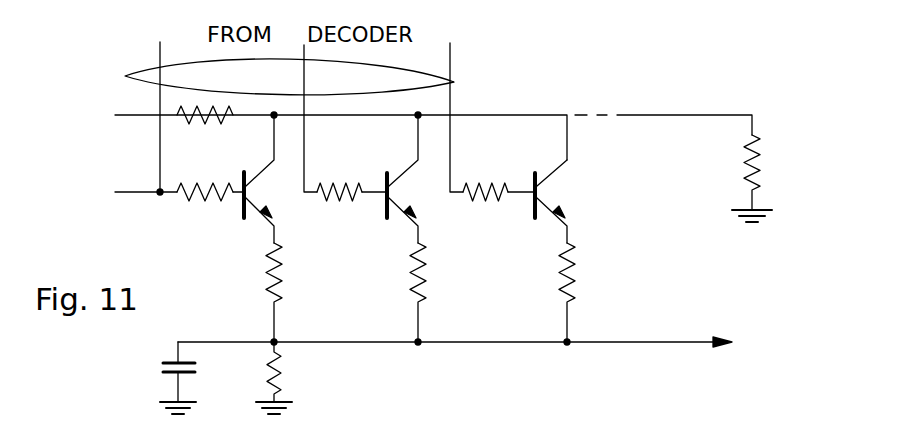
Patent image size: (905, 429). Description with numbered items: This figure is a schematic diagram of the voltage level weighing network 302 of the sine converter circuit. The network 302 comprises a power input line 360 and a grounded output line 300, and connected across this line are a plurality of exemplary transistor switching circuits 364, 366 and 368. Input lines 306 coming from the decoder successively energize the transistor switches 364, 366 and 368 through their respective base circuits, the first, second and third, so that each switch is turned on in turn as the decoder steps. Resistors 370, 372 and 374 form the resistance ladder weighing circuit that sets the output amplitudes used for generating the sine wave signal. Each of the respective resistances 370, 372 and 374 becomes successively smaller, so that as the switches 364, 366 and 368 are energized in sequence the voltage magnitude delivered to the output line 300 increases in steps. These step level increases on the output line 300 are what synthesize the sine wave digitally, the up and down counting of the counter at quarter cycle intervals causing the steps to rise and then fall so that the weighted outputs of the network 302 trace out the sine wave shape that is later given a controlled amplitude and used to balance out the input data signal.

The grounded output line 300 is at (336, 344).
The voltage level weighing network 302 is at (524, 108).
The input lines 306 is at (128, 76).
The power input line 360 is at (245, 118).
The transistor switching circuit 364 is at (241, 200).
The transistor switching circuit 366 is at (384, 200).
The transistor switching circuit 368 is at (532, 200).
The resistor 370 is at (280, 268).
The resistor 372 is at (424, 268).
The resistor 374 is at (573, 268).